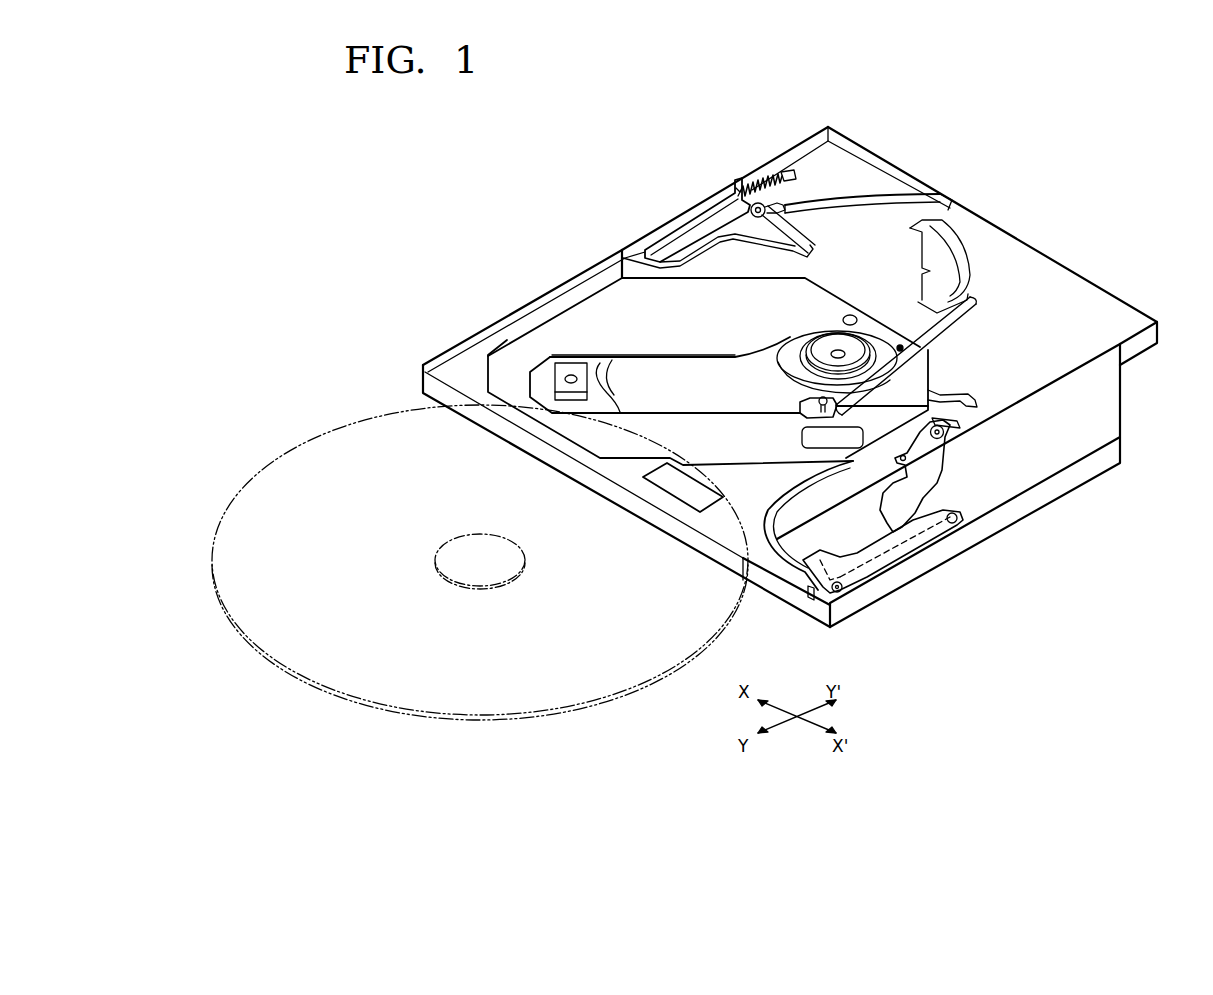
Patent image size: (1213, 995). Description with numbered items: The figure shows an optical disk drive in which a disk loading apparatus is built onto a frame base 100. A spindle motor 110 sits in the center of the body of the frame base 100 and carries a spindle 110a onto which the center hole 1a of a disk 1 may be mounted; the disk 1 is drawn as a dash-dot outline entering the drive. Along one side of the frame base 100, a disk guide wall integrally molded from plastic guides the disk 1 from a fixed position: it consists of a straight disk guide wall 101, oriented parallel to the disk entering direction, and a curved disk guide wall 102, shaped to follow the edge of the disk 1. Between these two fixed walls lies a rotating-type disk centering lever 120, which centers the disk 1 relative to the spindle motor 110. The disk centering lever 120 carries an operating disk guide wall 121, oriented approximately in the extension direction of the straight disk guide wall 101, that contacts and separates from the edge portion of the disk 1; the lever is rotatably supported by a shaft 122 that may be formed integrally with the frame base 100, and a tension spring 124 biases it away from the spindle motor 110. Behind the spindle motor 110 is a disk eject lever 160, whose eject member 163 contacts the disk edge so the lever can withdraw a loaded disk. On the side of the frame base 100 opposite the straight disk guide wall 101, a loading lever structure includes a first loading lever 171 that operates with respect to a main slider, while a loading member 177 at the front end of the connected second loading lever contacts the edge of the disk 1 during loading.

The disk 1 is at (480, 550).
The center hole 1a is at (445, 545).
The frame base 100 is at (1037, 263).
The straight disk guide wall 101 is at (563, 287).
The curved disk guide wall 102 is at (870, 198).
The spindle motor 110 is at (753, 359).
The spindle 110a is at (857, 350).
The disk centering lever 120 is at (719, 192).
The operating disk guide wall 121 is at (677, 228).
The shaft 122 is at (737, 190).
The tension spring 124 is at (770, 177).
The disk eject lever 160 is at (937, 283).
The eject member 163 is at (783, 402).
The first loading lever 171 is at (935, 465).
The loading member 177 is at (850, 581).